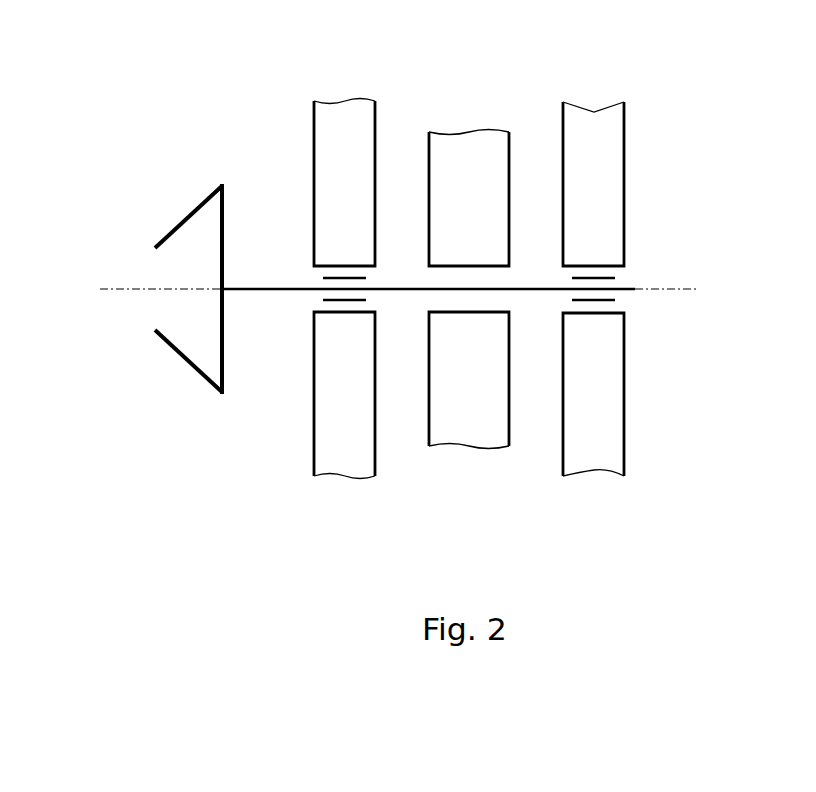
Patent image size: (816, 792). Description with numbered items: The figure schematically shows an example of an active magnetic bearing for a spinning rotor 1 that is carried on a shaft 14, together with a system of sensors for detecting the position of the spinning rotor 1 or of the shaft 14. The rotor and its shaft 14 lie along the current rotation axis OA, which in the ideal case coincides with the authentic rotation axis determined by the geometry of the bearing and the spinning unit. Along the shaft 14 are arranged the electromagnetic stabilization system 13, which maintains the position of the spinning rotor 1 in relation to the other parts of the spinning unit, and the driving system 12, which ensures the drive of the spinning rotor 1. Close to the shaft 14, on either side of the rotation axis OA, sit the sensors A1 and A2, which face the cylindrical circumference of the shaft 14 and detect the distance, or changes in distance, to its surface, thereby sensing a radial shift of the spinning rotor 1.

The spinning rotor 1 is at (182, 215).
The shaft 14 is at (262, 288).
The electromagnetic stabilization system 13 is at (338, 123).
The driving system 12 is at (465, 150).
The sensor A1 is at (598, 275).
The sensor A2 is at (340, 276).
The current rotation axis OA is at (112, 287).